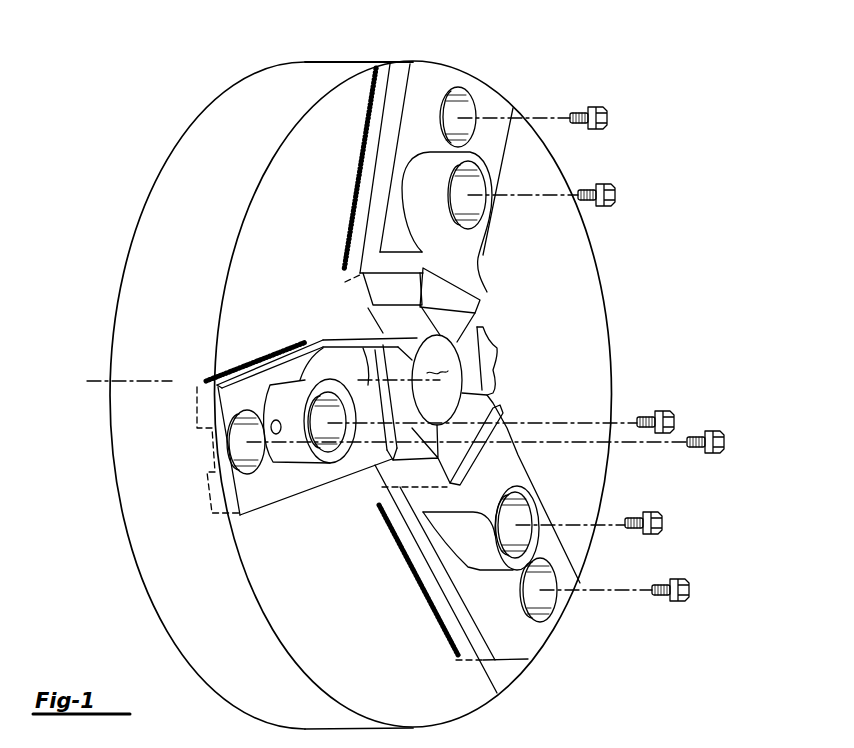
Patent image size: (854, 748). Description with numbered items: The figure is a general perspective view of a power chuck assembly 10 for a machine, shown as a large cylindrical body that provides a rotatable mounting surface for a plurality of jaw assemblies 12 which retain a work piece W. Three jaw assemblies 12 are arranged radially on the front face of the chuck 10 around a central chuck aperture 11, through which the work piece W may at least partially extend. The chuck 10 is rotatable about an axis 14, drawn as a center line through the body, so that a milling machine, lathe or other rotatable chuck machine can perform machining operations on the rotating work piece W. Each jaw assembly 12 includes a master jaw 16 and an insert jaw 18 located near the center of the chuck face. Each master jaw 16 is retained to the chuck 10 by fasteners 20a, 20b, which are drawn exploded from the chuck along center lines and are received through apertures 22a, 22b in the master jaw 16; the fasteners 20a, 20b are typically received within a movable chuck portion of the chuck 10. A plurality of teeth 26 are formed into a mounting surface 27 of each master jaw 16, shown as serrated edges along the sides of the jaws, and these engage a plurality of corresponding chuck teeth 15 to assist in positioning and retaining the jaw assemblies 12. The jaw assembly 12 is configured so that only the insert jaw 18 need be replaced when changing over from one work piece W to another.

The power chuck assembly 10 is at (664, 156).
The central chuck aperture 11 is at (373, 332).
The jaw assembly 12 is at (391, 57).
The axis 14 is at (92, 382).
The chuck teeth 15 is at (338, 256).
The master jaw 16 is at (432, 81).
The insert jaw 18 is at (489, 343).
The fastener 20a is at (614, 208).
The fastener 20b is at (606, 108).
The aperture 22a is at (487, 215).
The aperture 22b is at (474, 100).
The teeth 26 is at (340, 212).
The mounting surface 27 is at (358, 152).